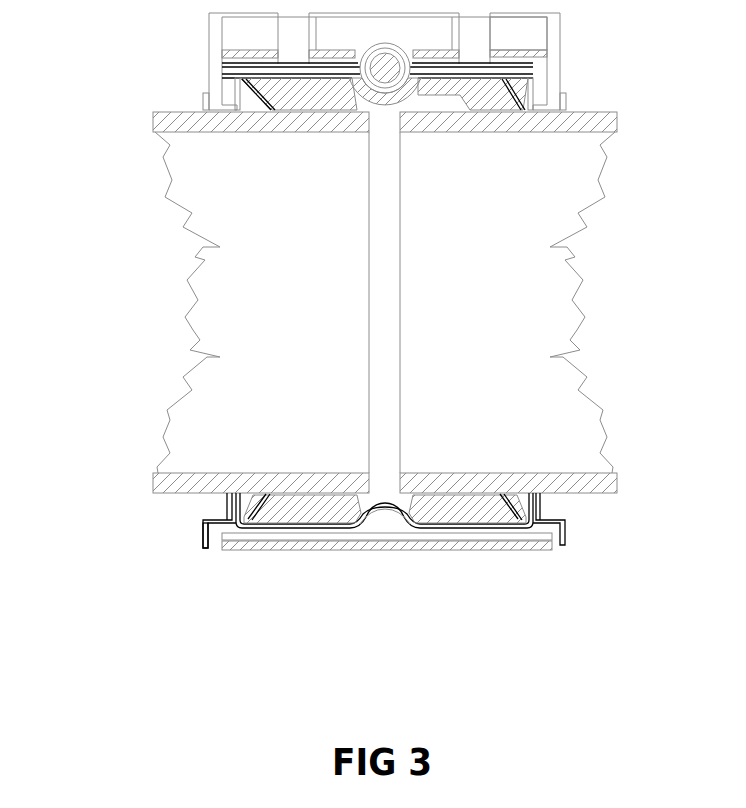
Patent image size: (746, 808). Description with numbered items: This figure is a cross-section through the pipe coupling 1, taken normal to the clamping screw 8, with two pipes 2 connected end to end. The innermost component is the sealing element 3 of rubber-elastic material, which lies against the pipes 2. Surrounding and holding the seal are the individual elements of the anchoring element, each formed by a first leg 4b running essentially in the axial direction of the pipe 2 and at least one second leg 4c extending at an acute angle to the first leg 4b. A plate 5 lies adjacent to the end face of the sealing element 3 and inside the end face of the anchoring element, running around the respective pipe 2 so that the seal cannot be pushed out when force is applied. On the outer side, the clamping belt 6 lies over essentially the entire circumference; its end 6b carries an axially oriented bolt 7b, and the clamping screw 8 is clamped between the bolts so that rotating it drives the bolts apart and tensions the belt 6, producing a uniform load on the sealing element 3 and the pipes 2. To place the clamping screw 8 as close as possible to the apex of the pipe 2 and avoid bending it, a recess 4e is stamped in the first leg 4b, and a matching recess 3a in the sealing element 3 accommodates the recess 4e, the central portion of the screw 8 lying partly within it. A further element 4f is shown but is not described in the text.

The pipe coupling 1 is at (198, 73).
The pipe 2 is at (205, 130).
The sealing element 3 is at (282, 509).
The recess 3a is at (363, 510).
The first leg 4b is at (512, 80).
The second leg 4c is at (232, 520).
The recess 4e is at (378, 522).
The bracket leg 4f is at (203, 546).
The plate 5 is at (523, 508).
The clamping belt 6 is at (427, 547).
The end of clamping belt 6b is at (512, 55).
The bolt 7b is at (556, 33).
The clamping screw 8 is at (382, 63).